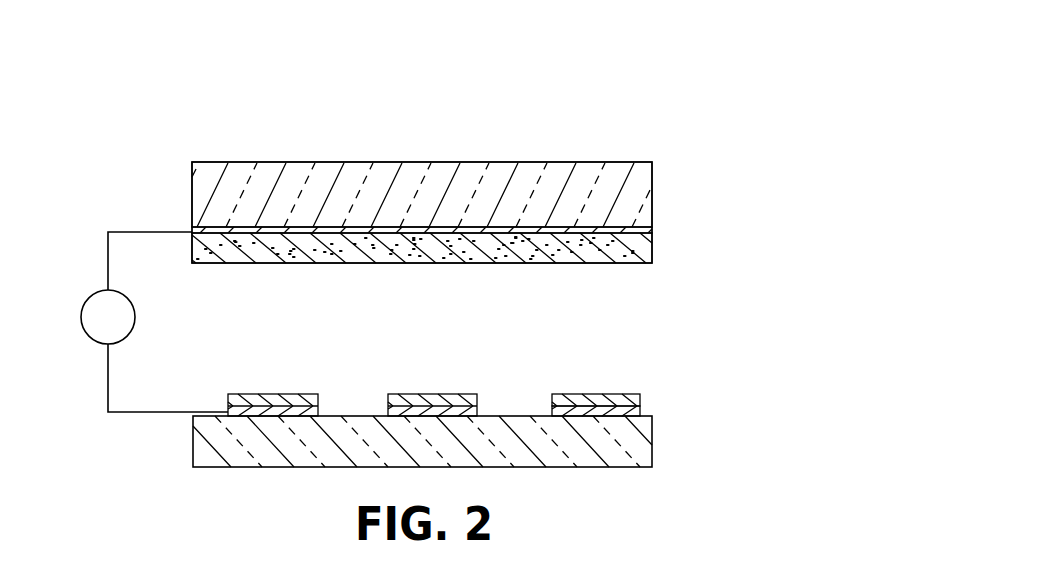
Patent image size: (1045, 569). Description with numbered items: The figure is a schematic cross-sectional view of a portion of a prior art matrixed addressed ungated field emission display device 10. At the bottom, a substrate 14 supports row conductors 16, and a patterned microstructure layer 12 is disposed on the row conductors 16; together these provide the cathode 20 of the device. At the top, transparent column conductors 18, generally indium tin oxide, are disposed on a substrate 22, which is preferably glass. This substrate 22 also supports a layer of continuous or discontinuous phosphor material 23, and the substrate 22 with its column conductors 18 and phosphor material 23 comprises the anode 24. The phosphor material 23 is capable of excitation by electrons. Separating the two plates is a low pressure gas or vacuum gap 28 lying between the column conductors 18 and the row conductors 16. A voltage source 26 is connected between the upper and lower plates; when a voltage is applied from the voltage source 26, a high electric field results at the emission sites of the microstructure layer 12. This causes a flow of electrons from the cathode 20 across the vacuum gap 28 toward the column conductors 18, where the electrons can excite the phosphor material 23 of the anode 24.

The field emission display device 10 is at (608, 68).
The anode 24 is at (499, 157).
The substrate 22 is at (653, 165).
The transparent column conductors 18 is at (653, 230).
The phosphor material 23 is at (653, 248).
The vacuum gap 28 is at (620, 305).
The substrate 14 is at (653, 447).
The cathode 20 is at (418, 390).
The patterned microstructure layer 12 is at (612, 393).
The row conductors 16 is at (641, 408).
The voltage source 26 is at (88, 293).